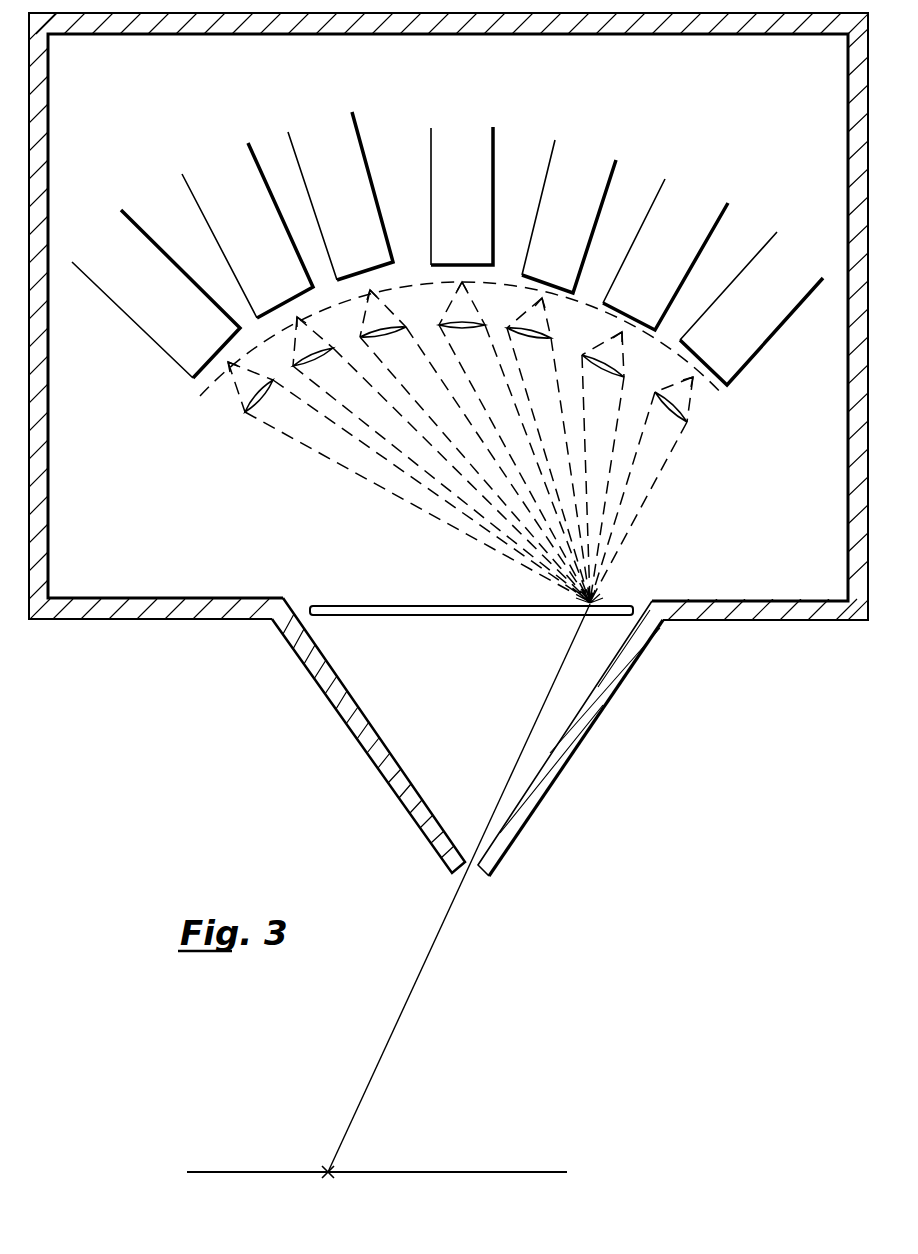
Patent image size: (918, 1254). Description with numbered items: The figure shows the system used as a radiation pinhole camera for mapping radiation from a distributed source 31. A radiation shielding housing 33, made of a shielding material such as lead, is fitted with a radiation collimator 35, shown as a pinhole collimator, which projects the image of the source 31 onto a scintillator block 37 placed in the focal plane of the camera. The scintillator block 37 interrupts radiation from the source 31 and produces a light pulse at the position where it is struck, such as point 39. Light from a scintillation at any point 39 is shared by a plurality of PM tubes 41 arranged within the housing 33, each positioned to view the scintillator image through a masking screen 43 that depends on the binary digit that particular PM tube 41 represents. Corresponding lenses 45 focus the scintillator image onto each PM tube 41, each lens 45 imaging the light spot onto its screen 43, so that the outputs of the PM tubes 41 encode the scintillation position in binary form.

The distributed source 31 is at (250, 1170).
The radiation shielding housing 33 is at (637, 36).
The radiation collimator 35 is at (325, 697).
The scintillator block 37 is at (390, 616).
The point 39 is at (587, 616).
The PM tubes 41 is at (453, 142).
The masking screen 43 is at (440, 282).
The lenses 45 is at (283, 348).